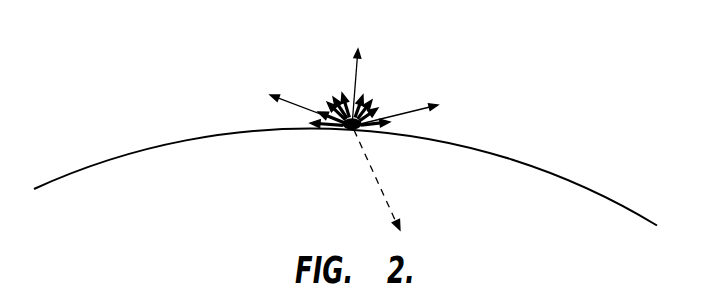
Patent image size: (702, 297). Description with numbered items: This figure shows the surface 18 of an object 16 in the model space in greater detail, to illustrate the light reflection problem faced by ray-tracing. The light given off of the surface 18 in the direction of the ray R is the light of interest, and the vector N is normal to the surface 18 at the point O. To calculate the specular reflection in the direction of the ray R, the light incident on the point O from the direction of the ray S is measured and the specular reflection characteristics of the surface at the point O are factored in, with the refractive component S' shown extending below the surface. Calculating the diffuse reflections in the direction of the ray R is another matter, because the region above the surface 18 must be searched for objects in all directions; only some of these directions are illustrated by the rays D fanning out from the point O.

The object 16 is at (498, 248).
The surface 18 is at (628, 207).
The rays D is at (350, 102).
The vector normal N is at (357, 74).
The ray R is at (302, 104).
The ray S is at (403, 110).
The refractive component S' is at (386, 192).
The point O is at (347, 141).